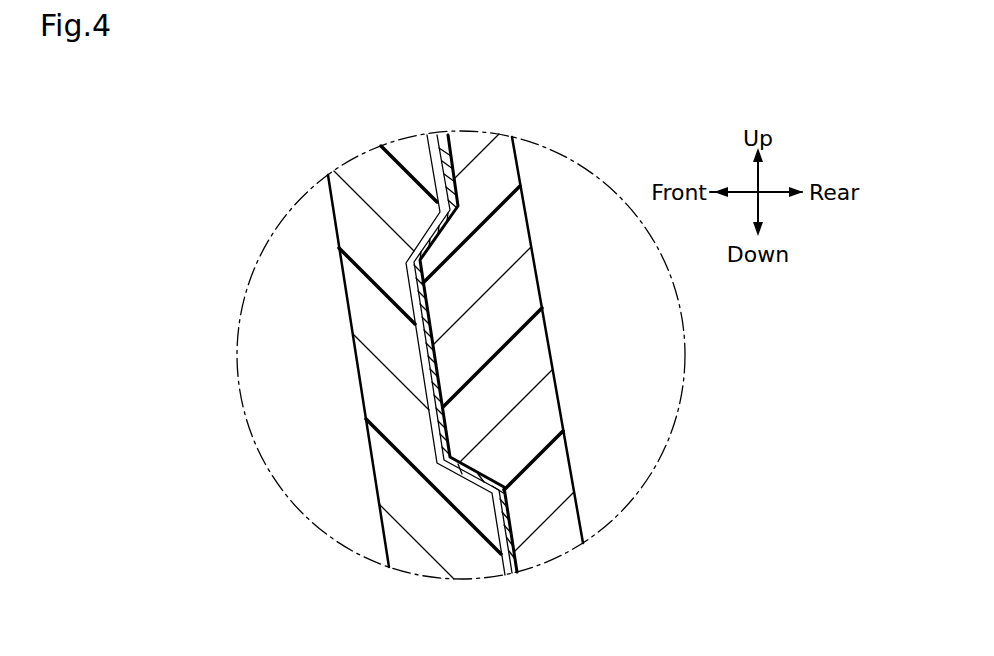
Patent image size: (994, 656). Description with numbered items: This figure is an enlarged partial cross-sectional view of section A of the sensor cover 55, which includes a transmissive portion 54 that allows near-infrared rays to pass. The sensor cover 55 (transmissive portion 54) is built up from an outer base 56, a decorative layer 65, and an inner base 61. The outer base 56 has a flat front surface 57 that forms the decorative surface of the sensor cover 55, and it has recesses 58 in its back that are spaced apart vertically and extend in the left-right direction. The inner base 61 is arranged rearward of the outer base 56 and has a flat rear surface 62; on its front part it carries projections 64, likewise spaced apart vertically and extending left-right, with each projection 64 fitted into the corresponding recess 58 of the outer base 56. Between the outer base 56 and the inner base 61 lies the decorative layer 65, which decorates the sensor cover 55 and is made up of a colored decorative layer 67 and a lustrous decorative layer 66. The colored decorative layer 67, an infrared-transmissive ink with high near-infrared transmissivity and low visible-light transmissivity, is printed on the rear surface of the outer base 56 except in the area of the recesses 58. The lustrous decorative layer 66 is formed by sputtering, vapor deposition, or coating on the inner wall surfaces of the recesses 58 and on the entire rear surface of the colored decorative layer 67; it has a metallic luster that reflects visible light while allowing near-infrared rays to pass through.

The sensor cover 55 is at (288, 270).
The transmissive portion 54 is at (424, 355).
The section A is at (238, 355).
The front surface 57 is at (327, 183).
The rear surface 62 is at (522, 158).
The outer base 56 is at (370, 168).
The recesses 58 is at (455, 255).
The projections 64 is at (437, 328).
The inner base 61 is at (482, 138).
The decorative layer 65 is at (393, 92).
The colored decorative layer 67 is at (428, 150).
The lustrous decorative layer 66 is at (448, 148).